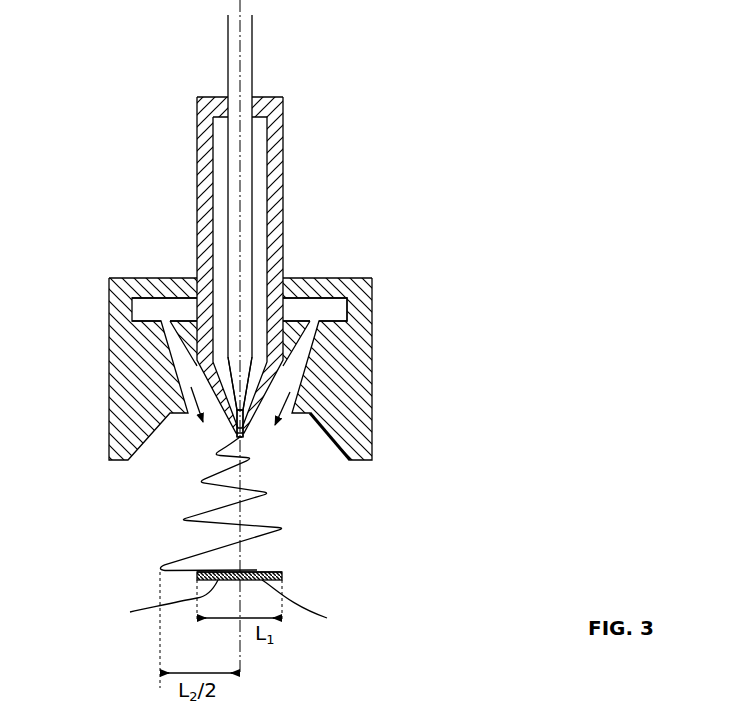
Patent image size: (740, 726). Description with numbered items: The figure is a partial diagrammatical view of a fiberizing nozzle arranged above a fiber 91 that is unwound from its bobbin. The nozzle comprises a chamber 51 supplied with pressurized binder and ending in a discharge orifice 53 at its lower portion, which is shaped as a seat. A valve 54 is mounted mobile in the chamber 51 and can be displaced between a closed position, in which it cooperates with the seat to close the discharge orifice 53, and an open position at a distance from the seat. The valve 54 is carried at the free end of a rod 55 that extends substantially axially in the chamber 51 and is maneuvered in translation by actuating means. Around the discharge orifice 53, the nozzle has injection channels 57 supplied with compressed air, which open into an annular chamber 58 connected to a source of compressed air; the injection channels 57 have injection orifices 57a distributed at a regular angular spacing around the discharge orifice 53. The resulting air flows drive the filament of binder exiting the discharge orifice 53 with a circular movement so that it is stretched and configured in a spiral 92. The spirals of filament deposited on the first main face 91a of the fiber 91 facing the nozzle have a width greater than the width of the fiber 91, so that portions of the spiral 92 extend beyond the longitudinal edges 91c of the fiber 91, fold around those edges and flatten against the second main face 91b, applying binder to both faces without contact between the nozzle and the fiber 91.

The chamber 51 is at (198, 163).
The discharge orifice 53 is at (230, 441).
The valve 54 is at (238, 374).
The rod 55 is at (228, 52).
The injection channels 57 is at (318, 352).
The injection orifices 57a is at (290, 413).
The annular chamber 58 is at (177, 298).
The fiber 91 is at (307, 606).
The first main face 91a is at (258, 568).
The second main face 91b is at (156, 608).
The longitudinal edges 91c is at (282, 572).
The spiral 92 is at (197, 513).